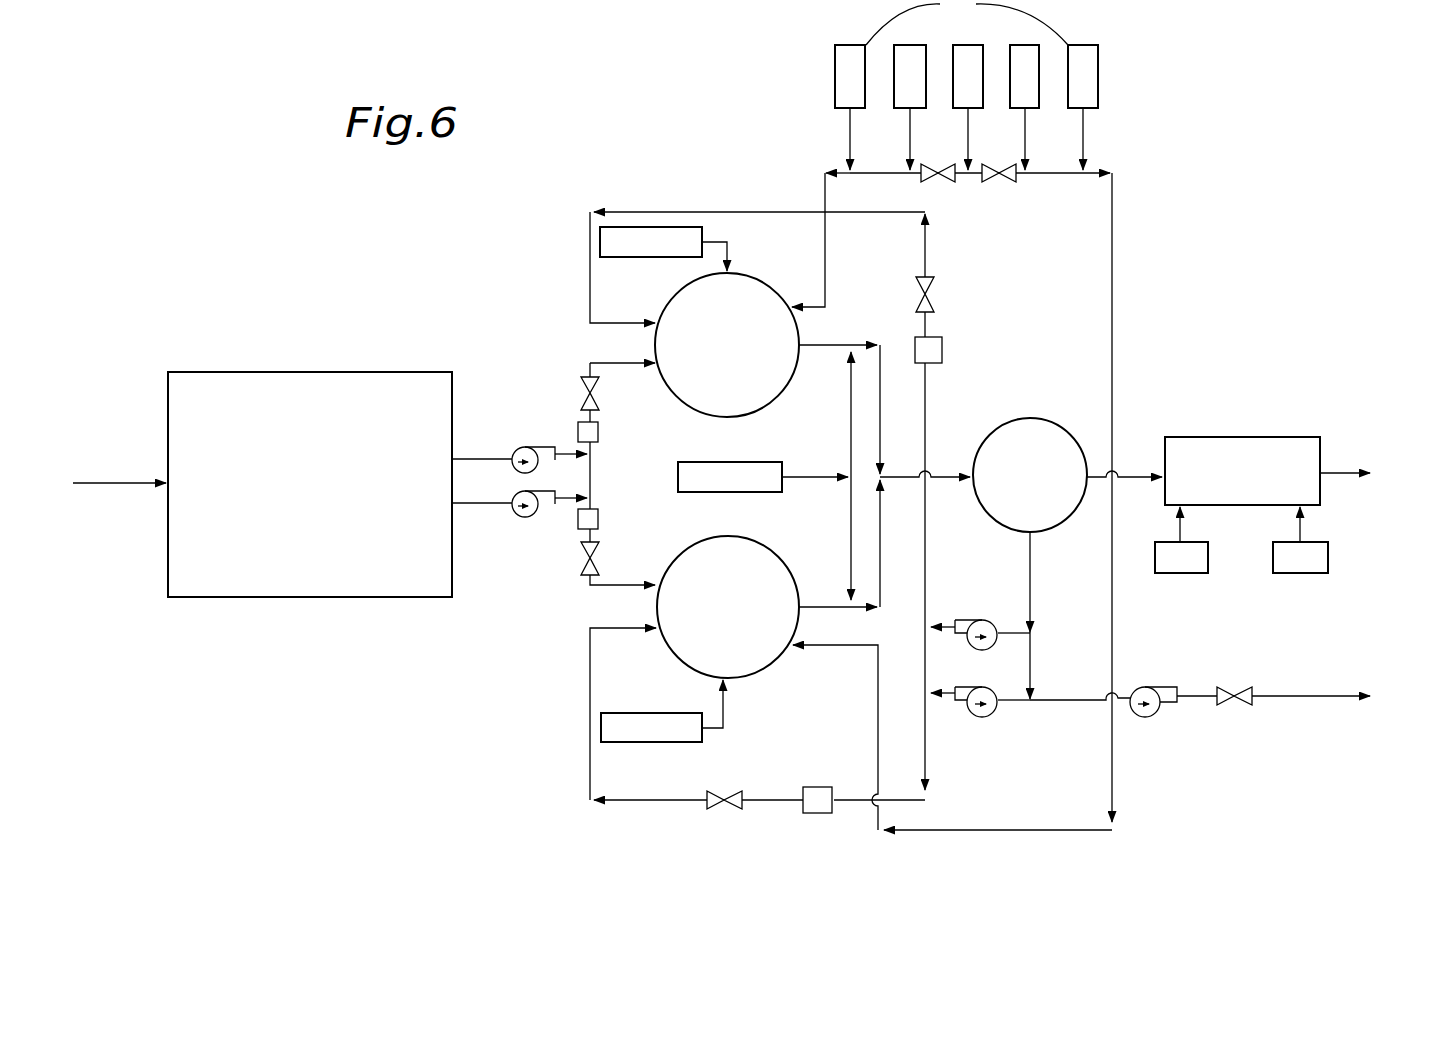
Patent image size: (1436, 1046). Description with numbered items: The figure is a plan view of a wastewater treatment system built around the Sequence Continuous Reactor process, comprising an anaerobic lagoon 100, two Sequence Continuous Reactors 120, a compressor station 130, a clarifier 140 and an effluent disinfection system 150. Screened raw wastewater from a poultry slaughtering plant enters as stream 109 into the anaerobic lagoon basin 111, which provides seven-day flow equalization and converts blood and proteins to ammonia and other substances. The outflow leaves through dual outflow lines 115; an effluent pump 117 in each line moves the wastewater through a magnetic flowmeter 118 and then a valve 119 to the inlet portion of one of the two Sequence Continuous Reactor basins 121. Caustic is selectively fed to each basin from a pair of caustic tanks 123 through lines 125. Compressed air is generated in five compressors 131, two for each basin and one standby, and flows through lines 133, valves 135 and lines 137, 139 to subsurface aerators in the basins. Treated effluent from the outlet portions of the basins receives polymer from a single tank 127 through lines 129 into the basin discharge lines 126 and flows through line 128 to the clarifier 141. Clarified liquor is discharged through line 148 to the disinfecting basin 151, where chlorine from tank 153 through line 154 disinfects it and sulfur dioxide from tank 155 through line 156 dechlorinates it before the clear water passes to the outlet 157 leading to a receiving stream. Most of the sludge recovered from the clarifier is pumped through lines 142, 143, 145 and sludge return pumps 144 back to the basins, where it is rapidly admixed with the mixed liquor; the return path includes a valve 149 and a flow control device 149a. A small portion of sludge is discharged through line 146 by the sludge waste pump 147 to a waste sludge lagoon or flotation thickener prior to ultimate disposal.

The anaerobic lagoon 100 is at (272, 360).
The stream 109 is at (113, 483).
The anaerobic lagoon basin 111 is at (388, 372).
The dual outflow lines 115 is at (488, 462).
The effluent pump 117 is at (532, 447).
The magnetic flowmeter 118 is at (598, 432).
The valve 119 is at (594, 385).
The Sequence Continuous Reactors 120 is at (716, 200).
The Sequence Continuous Reactor basin 121 is at (762, 280).
The caustic tank 123 is at (645, 258).
The caustic feed line 125 is at (729, 252).
The basin discharge line 126 is at (885, 442).
The polymer tank 127 is at (735, 460).
The clarifier feed line 128 is at (940, 475).
The polymer feed line 129 is at (850, 440).
The compressor station 130 is at (1032, 218).
The compressor 131 is at (1228, 437).
The air line 133 is at (853, 142).
The air valve 135 is at (1002, 182).
The air supply line 137 is at (825, 200).
The air supply line 139 is at (1113, 318).
The clarifier 140 is at (1045, 420).
The clarifier 141 is at (1017, 530).
The sludge line 142 is at (1032, 598).
The sludge line 143 is at (1010, 637).
The sludge return pump 144 is at (975, 650).
The sludge return line 145 is at (928, 258).
The waste sludge line 146 is at (1295, 695).
The sludge waste pump 147 is at (1152, 687).
The clarified liquor line 148 is at (1135, 476).
The valve 149 is at (936, 290).
The flow control device 149a is at (943, 345).
The effluent disinfection system 150 is at (1242, 443).
The disinfecting basin 151 is at (1272, 424).
The chlorine tank 153 is at (1178, 573).
The chlorine feed line 154 is at (1181, 522).
The sulfur dioxide tank 155 is at (1312, 573).
The sulfur dioxide feed line 156 is at (1299, 520).
The treated effluent outlet 157 is at (1342, 472).